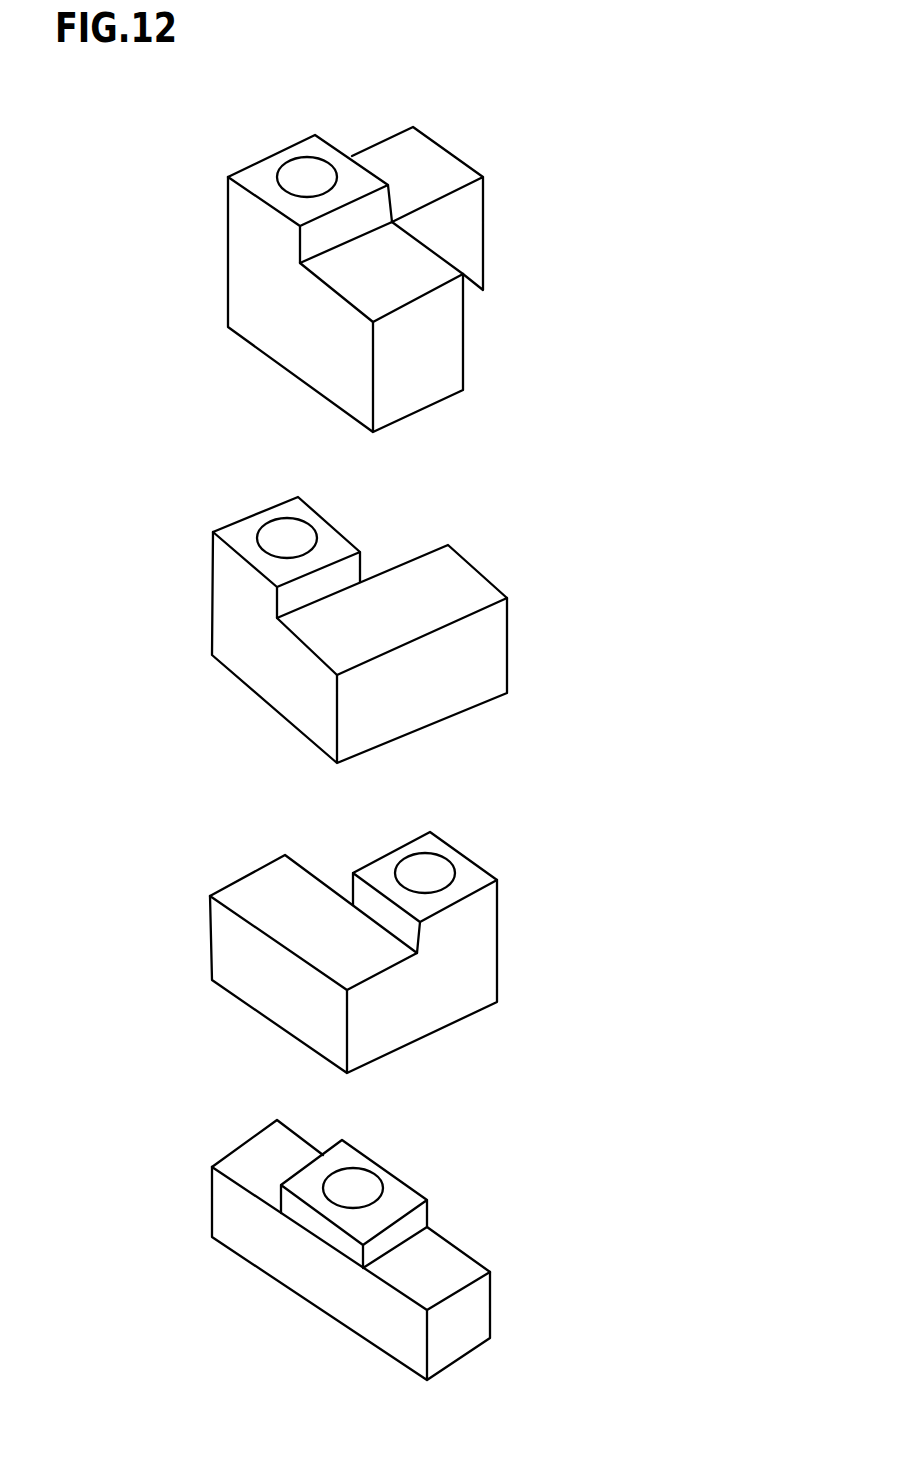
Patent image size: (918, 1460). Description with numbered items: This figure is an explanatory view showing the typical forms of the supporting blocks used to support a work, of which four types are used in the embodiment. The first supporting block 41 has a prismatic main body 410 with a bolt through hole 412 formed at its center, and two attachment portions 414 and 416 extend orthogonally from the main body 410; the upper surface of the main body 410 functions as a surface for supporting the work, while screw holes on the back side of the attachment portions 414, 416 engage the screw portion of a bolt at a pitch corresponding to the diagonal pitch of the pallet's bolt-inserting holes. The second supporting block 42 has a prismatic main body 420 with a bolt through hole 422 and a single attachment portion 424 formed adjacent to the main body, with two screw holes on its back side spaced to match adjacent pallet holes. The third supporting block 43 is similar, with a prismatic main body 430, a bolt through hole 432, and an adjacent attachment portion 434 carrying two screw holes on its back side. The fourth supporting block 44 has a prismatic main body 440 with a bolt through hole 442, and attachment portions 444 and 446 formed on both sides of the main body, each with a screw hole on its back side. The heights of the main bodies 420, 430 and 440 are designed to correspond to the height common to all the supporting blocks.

The first supporting block 41 is at (242, 282).
The main body 410 is at (267, 165).
The bolt through hole 412 is at (317, 167).
The attachment portion 414 is at (448, 163).
The attachment portion 416 is at (415, 283).
The second supporting block 42 is at (225, 622).
The main body 420 is at (237, 533).
The bolt through hole 422 is at (298, 532).
The attachment portion 424 is at (473, 583).
The third supporting block 43 is at (218, 943).
The main body 430 is at (477, 880).
The bolt through hole 432 is at (437, 868).
The attachment portion 434 is at (263, 875).
The fourth supporting block 44 is at (228, 1215).
The main body 440 is at (403, 1197).
The bolt through hole 442 is at (360, 1187).
The attachment portion 444 is at (262, 1152).
The attachment portion 446 is at (458, 1260).